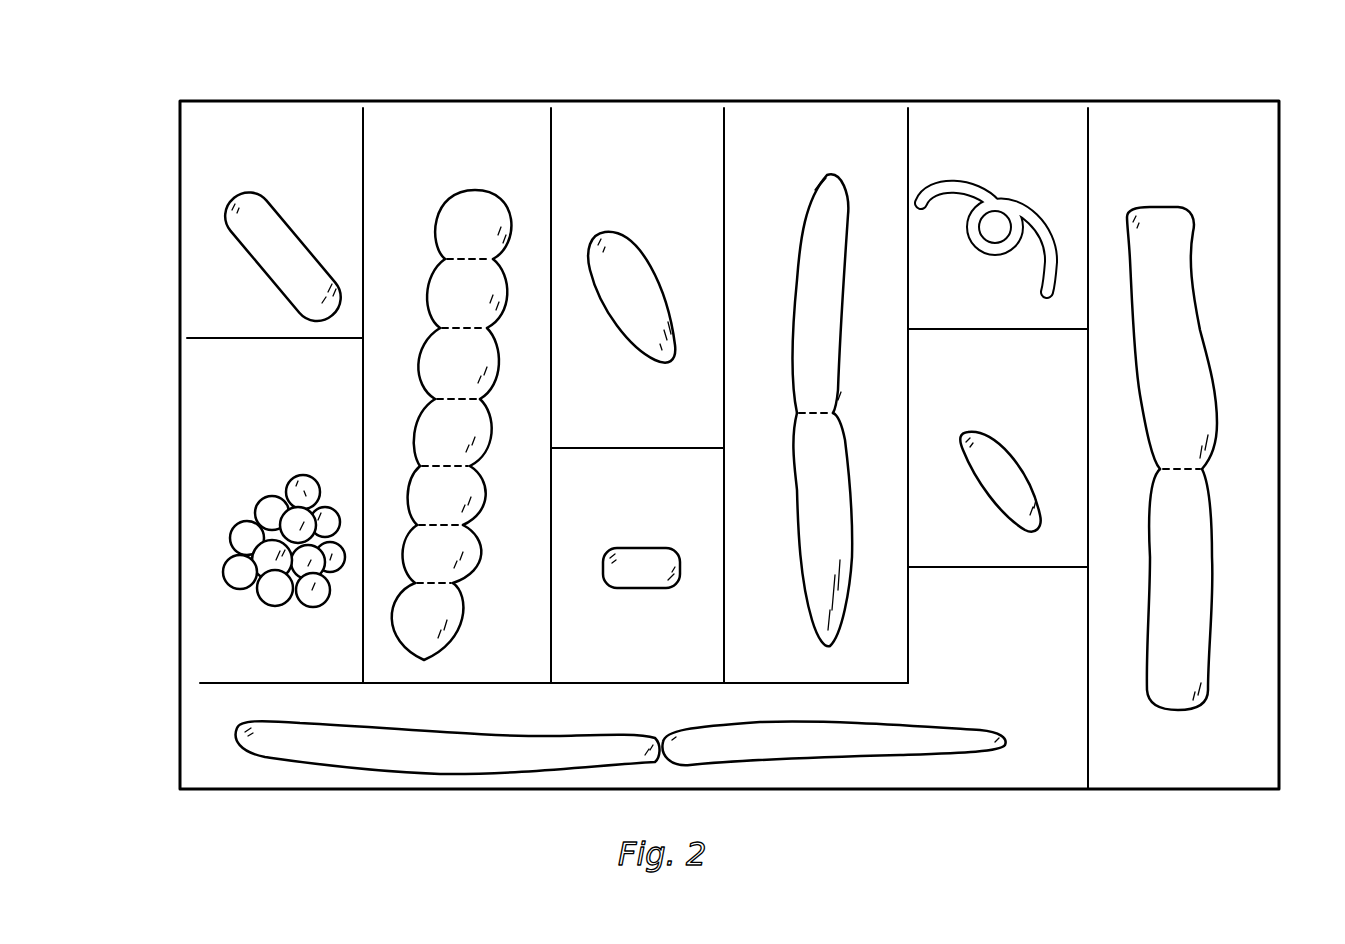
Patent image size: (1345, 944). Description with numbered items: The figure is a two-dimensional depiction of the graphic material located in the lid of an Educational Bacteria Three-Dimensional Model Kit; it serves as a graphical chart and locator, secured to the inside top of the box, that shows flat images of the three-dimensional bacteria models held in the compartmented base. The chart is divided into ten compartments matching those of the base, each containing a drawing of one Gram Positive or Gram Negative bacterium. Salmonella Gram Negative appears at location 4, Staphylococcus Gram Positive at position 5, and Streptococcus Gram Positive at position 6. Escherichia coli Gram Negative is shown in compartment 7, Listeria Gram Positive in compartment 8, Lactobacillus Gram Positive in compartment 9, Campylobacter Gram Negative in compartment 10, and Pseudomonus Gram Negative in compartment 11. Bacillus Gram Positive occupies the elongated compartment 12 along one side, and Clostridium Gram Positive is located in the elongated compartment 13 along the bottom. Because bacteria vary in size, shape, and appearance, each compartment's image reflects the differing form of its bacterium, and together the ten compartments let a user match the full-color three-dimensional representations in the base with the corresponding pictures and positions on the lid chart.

The location of Salmonella Gram Negative 4 is at (313, 120).
The position of Staphylococcus Gram Positive 5 is at (213, 632).
The position of Streptococcus Gram Positive 6 is at (506, 118).
The compartment for Escherichia coli Gram Negative 7 is at (707, 118).
The compartment for Listeria Gram Positive 8 is at (687, 652).
The compartment for Lactobacillus Gram Positive 9 is at (884, 117).
The compartment for Campylobacter Gram Negative 10 is at (1052, 117).
The compartment for Pseudomonus Gram Negative 11 is at (893, 607).
The elongated compartment for Bacillus Gram Positive 12 is at (1250, 642).
The elongated compartment for Clostridium Gram Positive 13 is at (230, 767).